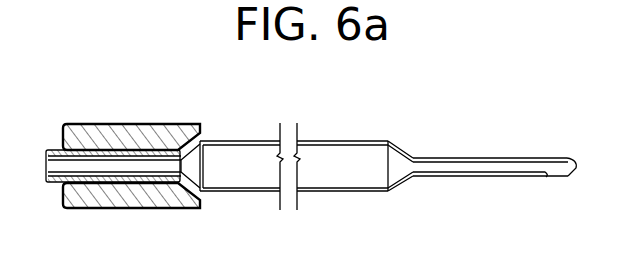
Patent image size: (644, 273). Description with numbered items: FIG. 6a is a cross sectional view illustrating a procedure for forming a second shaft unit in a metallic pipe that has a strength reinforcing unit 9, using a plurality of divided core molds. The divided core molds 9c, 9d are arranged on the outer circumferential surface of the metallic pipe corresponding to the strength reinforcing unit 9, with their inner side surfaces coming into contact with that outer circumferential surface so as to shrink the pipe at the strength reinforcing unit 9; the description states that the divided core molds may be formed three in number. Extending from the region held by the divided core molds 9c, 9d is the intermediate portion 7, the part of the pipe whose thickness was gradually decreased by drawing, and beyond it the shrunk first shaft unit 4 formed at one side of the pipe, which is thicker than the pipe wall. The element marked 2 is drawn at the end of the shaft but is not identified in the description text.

The needle 2 is at (577, 168).
The first shaft unit 4 is at (547, 177).
The intermediate portion 7 is at (243, 141).
The strength reinforcing unit 9 is at (45, 177).
The divided core mold 9c is at (68, 125).
The divided core mold 9d is at (68, 209).